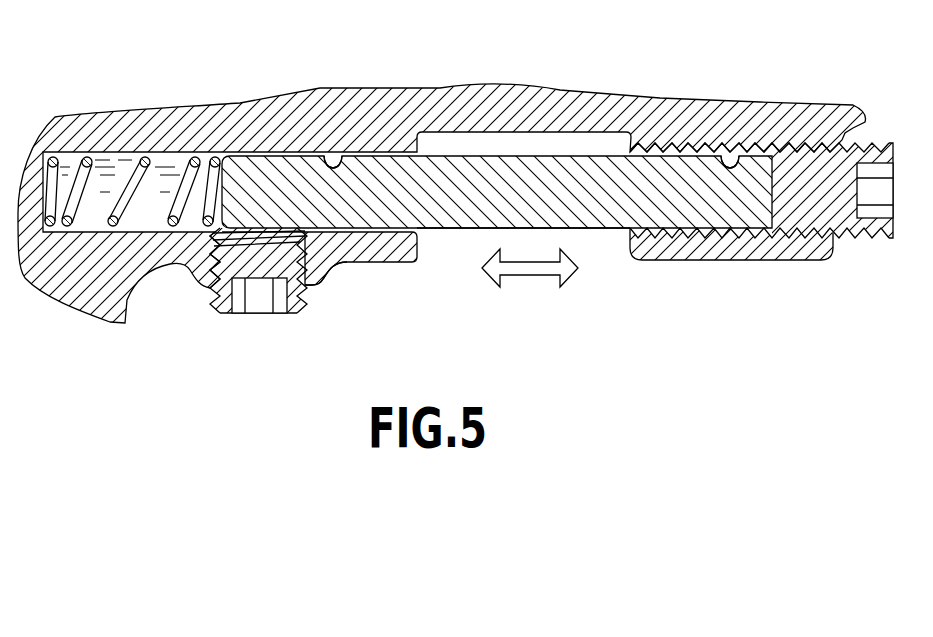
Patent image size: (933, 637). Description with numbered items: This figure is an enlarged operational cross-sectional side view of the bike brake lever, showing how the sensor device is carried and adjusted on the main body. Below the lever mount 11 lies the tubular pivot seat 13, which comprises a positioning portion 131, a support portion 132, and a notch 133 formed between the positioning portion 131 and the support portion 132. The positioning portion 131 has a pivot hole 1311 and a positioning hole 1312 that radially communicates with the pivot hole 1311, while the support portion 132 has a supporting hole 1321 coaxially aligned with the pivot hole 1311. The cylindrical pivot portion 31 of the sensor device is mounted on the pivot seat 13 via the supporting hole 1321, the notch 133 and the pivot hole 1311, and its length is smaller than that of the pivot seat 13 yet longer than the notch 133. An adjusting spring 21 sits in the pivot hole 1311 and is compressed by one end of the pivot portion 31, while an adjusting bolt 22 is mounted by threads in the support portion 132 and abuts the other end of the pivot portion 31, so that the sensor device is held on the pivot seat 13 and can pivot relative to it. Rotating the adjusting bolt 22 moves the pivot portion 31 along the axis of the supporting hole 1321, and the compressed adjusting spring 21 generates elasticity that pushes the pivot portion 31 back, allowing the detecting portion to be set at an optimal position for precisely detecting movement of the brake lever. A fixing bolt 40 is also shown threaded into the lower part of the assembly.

The lever mount 11 is at (624, 82).
The adjusting spring 21 is at (133, 168).
The pivot portion 31 is at (543, 190).
The pivot hole 1311 is at (326, 160).
The supporting hole 1321 is at (733, 163).
The pivot seat 13 is at (555, 295).
The positioning portion 131 is at (365, 250).
The positioning hole 1312 is at (306, 285).
The support portion 132 is at (783, 250).
The notch 133 is at (592, 235).
The adjusting bolt 22 is at (867, 233).
The fixing bolt 40 is at (216, 308).